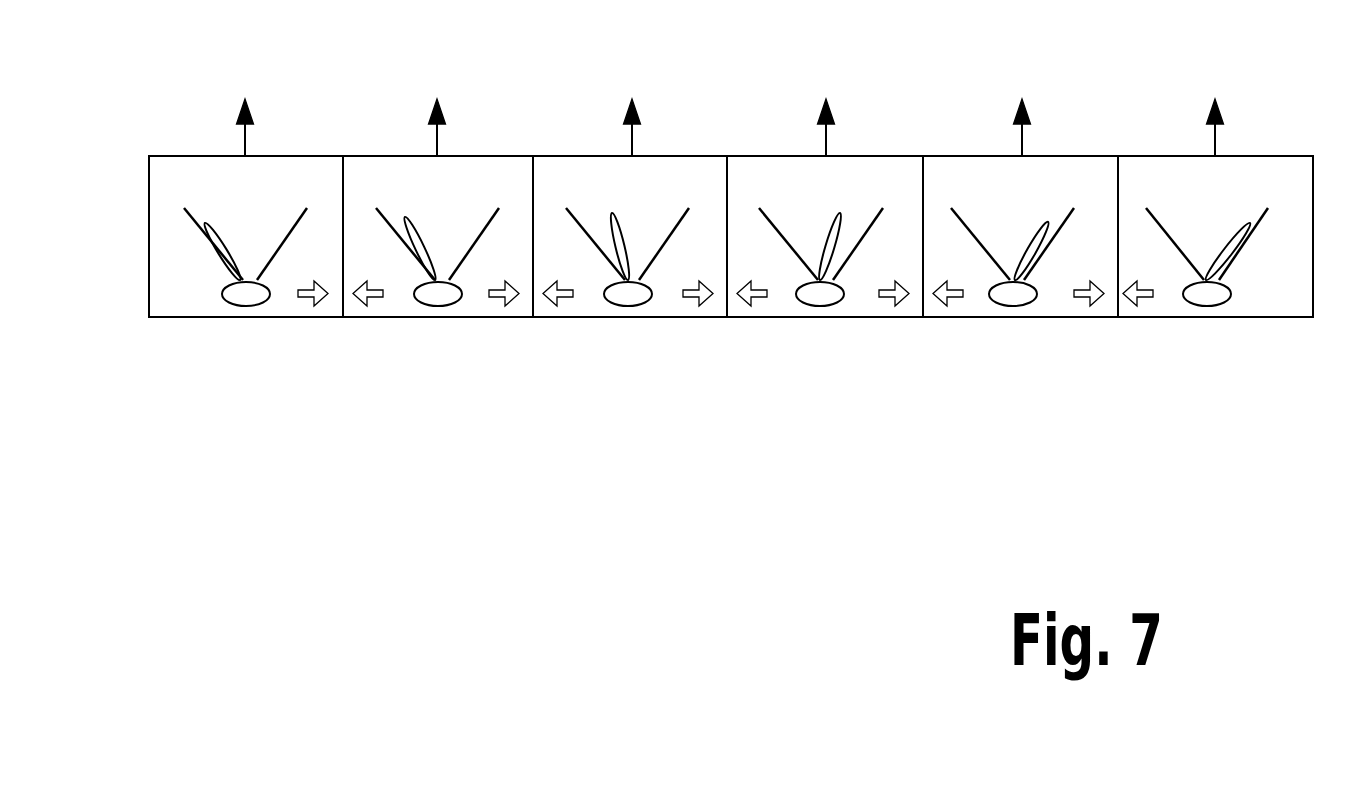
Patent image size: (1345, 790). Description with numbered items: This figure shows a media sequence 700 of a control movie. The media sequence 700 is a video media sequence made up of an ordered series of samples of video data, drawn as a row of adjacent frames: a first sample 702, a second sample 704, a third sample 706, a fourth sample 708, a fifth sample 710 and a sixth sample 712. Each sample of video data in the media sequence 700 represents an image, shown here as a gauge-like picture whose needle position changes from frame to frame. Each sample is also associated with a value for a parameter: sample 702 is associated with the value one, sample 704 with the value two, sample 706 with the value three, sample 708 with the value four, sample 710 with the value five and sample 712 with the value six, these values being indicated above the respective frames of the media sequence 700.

The media sequence 700 is at (149, 227).
The sample 702 is at (248, 317).
The sample 704 is at (440, 317).
The sample 706 is at (634, 317).
The sample 708 is at (817, 317).
The sample 710 is at (1022, 317).
The sample 712 is at (1208, 317).